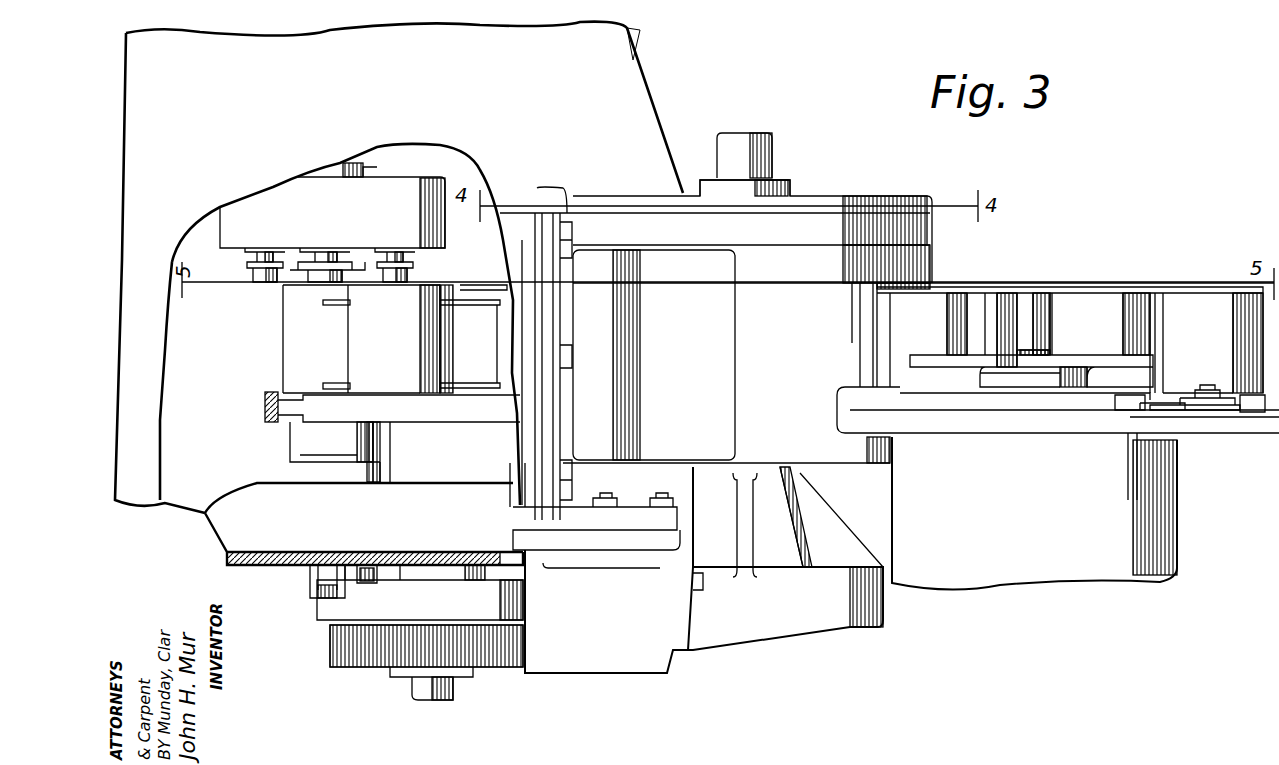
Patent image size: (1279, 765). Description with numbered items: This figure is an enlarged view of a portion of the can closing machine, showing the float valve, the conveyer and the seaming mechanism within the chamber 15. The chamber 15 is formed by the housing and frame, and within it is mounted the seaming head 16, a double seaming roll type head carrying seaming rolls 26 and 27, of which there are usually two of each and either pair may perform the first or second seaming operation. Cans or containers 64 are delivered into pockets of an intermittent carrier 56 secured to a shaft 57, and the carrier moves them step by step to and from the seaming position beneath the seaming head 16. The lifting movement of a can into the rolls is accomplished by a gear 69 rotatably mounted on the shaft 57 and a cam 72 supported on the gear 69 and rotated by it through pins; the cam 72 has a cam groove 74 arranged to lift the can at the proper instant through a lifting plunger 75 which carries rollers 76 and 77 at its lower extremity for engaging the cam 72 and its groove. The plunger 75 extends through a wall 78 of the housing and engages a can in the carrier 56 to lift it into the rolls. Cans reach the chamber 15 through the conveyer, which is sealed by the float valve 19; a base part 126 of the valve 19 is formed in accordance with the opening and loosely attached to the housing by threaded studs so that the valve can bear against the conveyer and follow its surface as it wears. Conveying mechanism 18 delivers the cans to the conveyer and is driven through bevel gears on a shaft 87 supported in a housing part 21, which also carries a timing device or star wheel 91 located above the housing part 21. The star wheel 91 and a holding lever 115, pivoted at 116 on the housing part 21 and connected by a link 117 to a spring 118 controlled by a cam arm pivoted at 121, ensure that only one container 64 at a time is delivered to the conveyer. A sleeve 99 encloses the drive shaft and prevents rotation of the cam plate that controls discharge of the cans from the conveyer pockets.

The chamber 15 is at (618, 98).
The seaming head 16 is at (447, 240).
The conveying mechanism 18 is at (995, 430).
The float valve 19 is at (712, 340).
The housing part 21 is at (1155, 540).
The seaming rolls 26 is at (330, 262).
The seaming rolls 27 is at (260, 262).
The intermittent carrier 56 is at (265, 405).
The shaft 57 is at (440, 692).
The containers 64 is at (395, 339).
The gear 69 is at (345, 662).
The cam 72 is at (505, 603).
The cam groove 74 is at (520, 577).
The lifting plunger 75 is at (290, 463).
The roller 76 is at (318, 590).
The roller 77 is at (375, 580).
The wall 78 is at (255, 505).
The shaft 87 is at (1040, 352).
The star wheel 91 is at (1005, 358).
The sleeve 99 is at (772, 158).
The holding lever 115 is at (1255, 412).
The pivot 116 is at (1205, 388).
The link 117 is at (1200, 410).
The spring 118 is at (1175, 410).
The pivot 121 is at (1130, 418).
The base part 126 is at (572, 356).